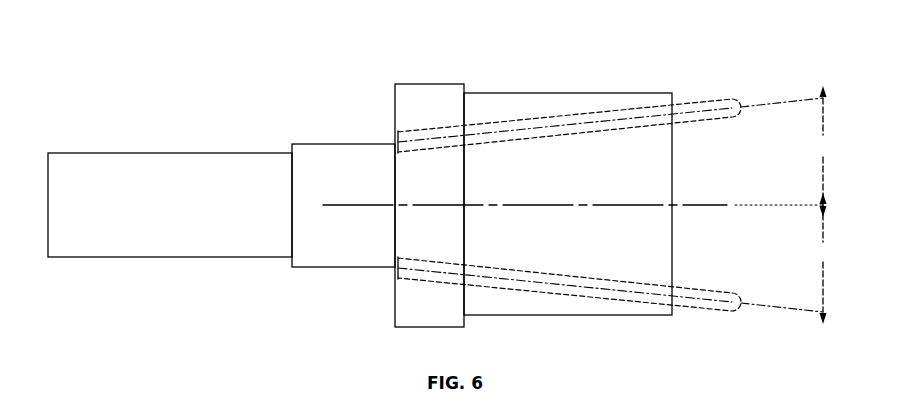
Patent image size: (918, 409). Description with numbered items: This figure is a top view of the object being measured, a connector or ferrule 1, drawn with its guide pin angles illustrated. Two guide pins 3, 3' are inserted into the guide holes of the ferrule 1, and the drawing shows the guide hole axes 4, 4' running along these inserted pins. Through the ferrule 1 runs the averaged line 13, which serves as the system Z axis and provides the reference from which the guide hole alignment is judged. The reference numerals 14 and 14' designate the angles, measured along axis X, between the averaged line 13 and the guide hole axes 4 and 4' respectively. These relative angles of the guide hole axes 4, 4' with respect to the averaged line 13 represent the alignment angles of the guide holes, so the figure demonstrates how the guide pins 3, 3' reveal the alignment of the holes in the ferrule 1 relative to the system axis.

The connector or ferrule 1 is at (243, 96).
The guide pin 3 is at (569, 87).
The guide pin 3' is at (569, 308).
The guide hole axis 4 is at (778, 129).
The guide hole axis 4' is at (781, 286).
The averaged line 13 is at (770, 206).
The angle 14 is at (823, 151).
The angle 14' is at (830, 258).